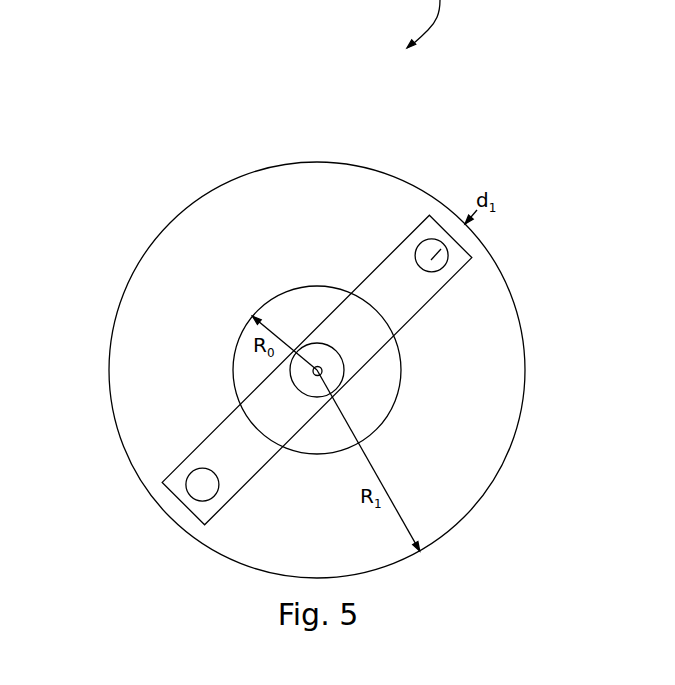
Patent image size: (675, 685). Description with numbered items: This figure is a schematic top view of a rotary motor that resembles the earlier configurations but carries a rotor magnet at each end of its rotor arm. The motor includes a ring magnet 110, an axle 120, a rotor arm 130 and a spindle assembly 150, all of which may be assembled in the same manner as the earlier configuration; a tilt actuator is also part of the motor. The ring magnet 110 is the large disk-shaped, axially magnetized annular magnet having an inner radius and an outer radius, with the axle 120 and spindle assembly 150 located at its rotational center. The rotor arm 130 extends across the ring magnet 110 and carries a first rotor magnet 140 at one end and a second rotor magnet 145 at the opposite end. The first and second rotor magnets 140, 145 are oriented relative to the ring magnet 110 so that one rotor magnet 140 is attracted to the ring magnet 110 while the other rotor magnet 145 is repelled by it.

The ring magnet 110 is at (528, 278).
The axle 120 is at (341, 355).
The rotor arm 130 is at (199, 516).
The first rotor magnet 140 is at (432, 239).
The second rotor magnet 145 is at (192, 470).
The spindle assembly 150 is at (310, 346).